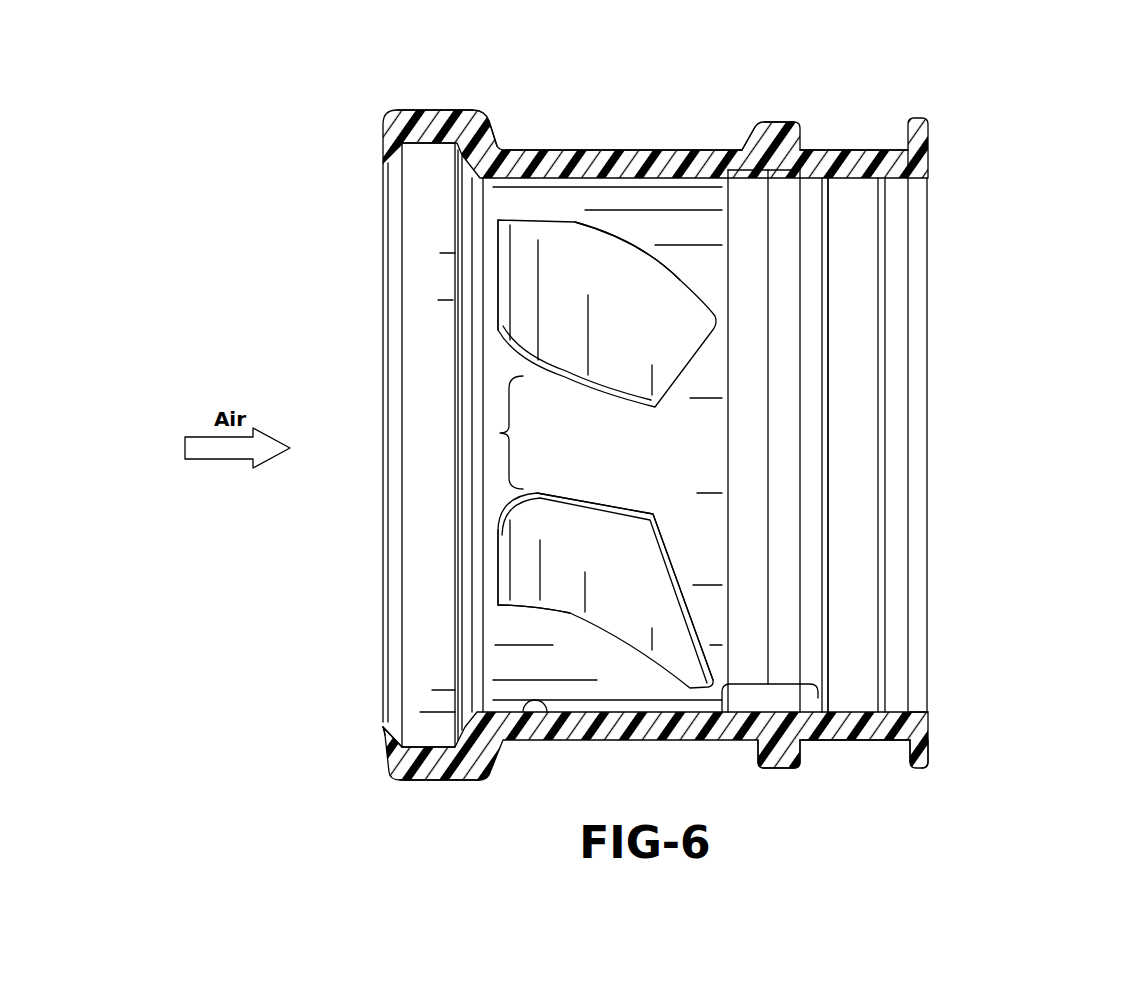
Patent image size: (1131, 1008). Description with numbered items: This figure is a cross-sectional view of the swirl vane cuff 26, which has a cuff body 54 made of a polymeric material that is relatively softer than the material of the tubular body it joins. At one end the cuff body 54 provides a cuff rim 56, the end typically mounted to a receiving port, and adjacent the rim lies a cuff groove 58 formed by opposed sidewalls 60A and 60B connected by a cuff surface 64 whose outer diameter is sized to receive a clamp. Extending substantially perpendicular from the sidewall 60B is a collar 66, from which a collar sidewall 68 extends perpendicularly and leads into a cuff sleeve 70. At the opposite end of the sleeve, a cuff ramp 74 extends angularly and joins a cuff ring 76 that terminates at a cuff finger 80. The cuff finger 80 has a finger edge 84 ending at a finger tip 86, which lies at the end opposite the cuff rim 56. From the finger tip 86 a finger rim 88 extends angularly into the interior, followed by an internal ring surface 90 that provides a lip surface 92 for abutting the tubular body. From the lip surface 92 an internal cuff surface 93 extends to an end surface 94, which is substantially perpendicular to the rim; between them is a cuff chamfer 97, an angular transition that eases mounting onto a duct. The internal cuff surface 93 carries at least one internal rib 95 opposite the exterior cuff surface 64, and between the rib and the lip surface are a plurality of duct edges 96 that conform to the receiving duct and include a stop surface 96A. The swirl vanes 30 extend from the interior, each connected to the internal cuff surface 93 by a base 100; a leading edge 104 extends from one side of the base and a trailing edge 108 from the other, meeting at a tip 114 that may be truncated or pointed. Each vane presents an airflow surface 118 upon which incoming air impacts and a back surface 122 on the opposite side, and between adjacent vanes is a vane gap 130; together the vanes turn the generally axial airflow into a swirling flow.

The swirl vane cuff 26 is at (1030, 97).
The swirl vanes 30 is at (672, 489).
The cuff body 54 is at (581, 120).
The cuff rim 56 is at (917, 118).
The cuff groove 58 is at (863, 123).
The sidewall 60A is at (900, 757).
The sidewall 60B is at (805, 752).
The cuff surface 64 is at (867, 738).
The collar 66 is at (782, 122).
The collar sidewall 68 is at (755, 128).
The cuff sleeve 70 is at (703, 148).
The cuff ramp 74 is at (483, 147).
The cuff ring 76 is at (433, 110).
The cuff finger 80 is at (383, 130).
The finger edge 84 is at (387, 765).
The finger tip 86 is at (381, 722).
The finger rim 88 is at (395, 722).
The internal ring surface 90 is at (433, 747).
The lip surface 92 is at (460, 155).
The internal cuff surface 93 is at (537, 716).
The end surface 94 is at (927, 748).
The internal rib 95 is at (827, 620).
The duct edges 96 is at (770, 665).
The stop surface 96A is at (733, 716).
The cuff chamfer 97 is at (913, 722).
The base 100 is at (568, 377).
The leading edge 104 is at (497, 270).
The trailing edge 108 is at (673, 570).
The tip 114 is at (557, 494).
The airflow surface 118 is at (565, 548).
The back surface 122 is at (630, 268).
The vane gap 130 is at (498, 433).